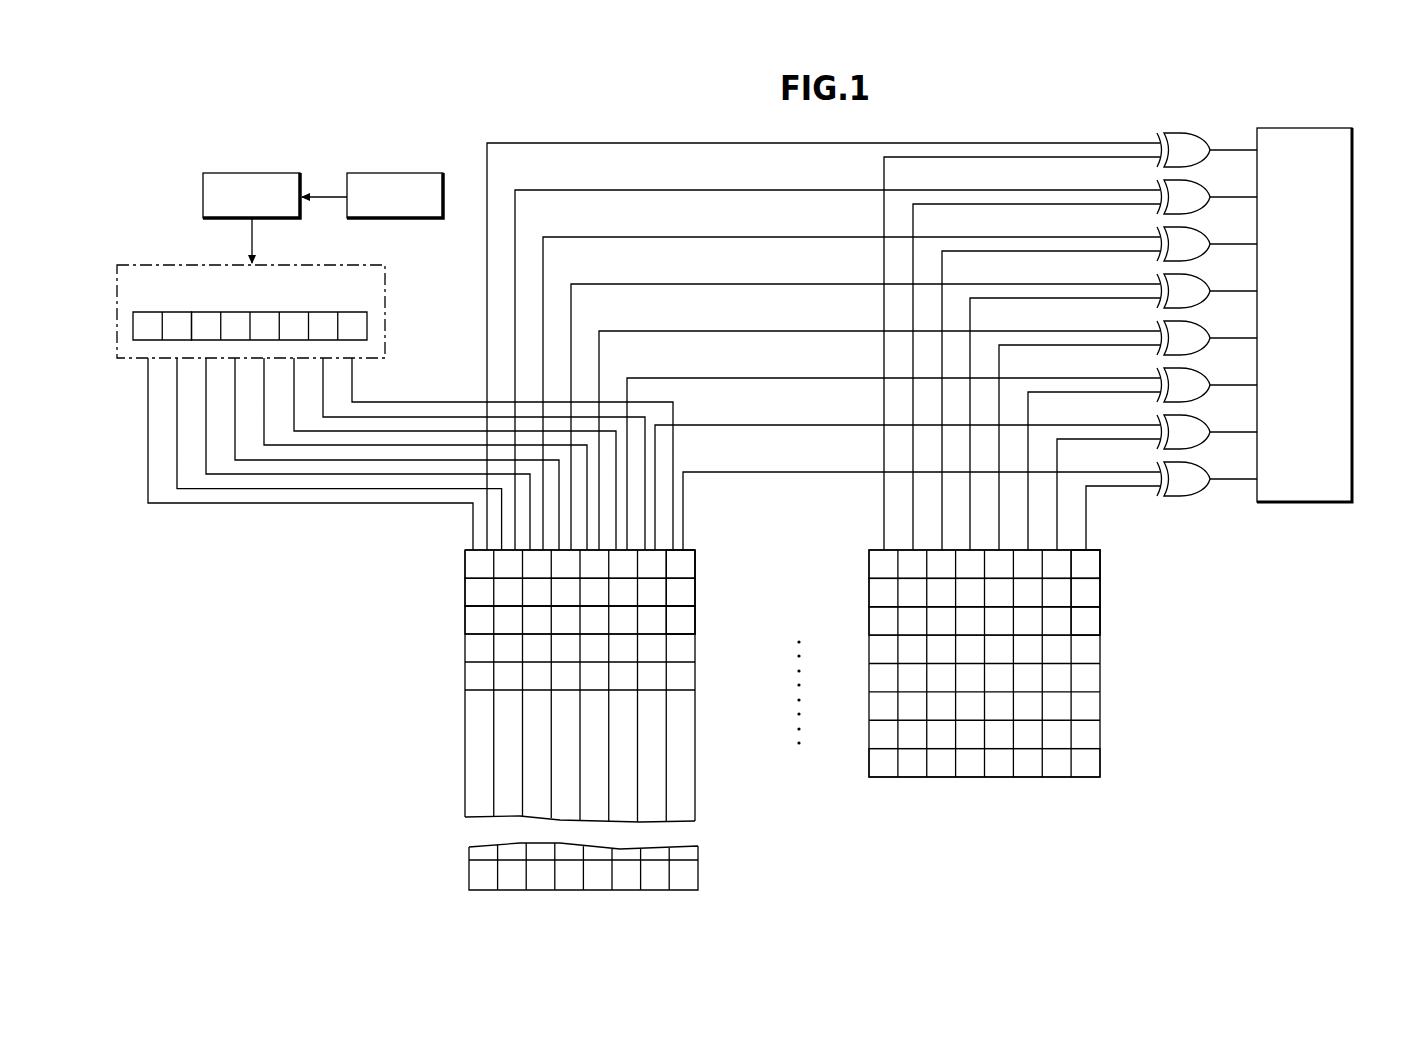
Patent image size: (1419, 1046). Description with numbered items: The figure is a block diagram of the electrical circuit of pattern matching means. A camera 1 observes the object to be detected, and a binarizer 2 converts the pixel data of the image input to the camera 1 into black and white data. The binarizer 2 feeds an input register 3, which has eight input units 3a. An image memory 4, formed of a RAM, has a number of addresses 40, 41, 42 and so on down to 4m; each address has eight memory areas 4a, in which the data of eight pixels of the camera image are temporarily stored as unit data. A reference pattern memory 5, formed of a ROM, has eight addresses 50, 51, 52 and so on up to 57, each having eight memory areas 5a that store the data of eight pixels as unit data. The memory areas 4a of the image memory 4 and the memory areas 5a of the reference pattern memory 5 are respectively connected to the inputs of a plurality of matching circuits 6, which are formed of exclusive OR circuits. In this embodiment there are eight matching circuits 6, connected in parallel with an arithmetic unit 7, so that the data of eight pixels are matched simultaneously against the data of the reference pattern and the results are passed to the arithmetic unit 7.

The camera 1 is at (397, 172).
The binarizer 2 is at (202, 155).
The input register 3 is at (385, 303).
The input unit 3a is at (182, 320).
The image memory 4 is at (491, 720).
The memory area 4a is at (688, 622).
The address 4m is at (456, 875).
The address 40 is at (450, 563).
The address 41 is at (450, 592).
The address 42 is at (450, 620).
The reference pattern memory 5 is at (1066, 686).
The memory area 5a is at (1093, 620).
The address 50 is at (856, 563).
The address 51 is at (856, 592).
The address 52 is at (856, 620).
The address 57 is at (856, 763).
The matching circuit 6 is at (1185, 133).
The arithmetic unit 7 is at (1302, 133).